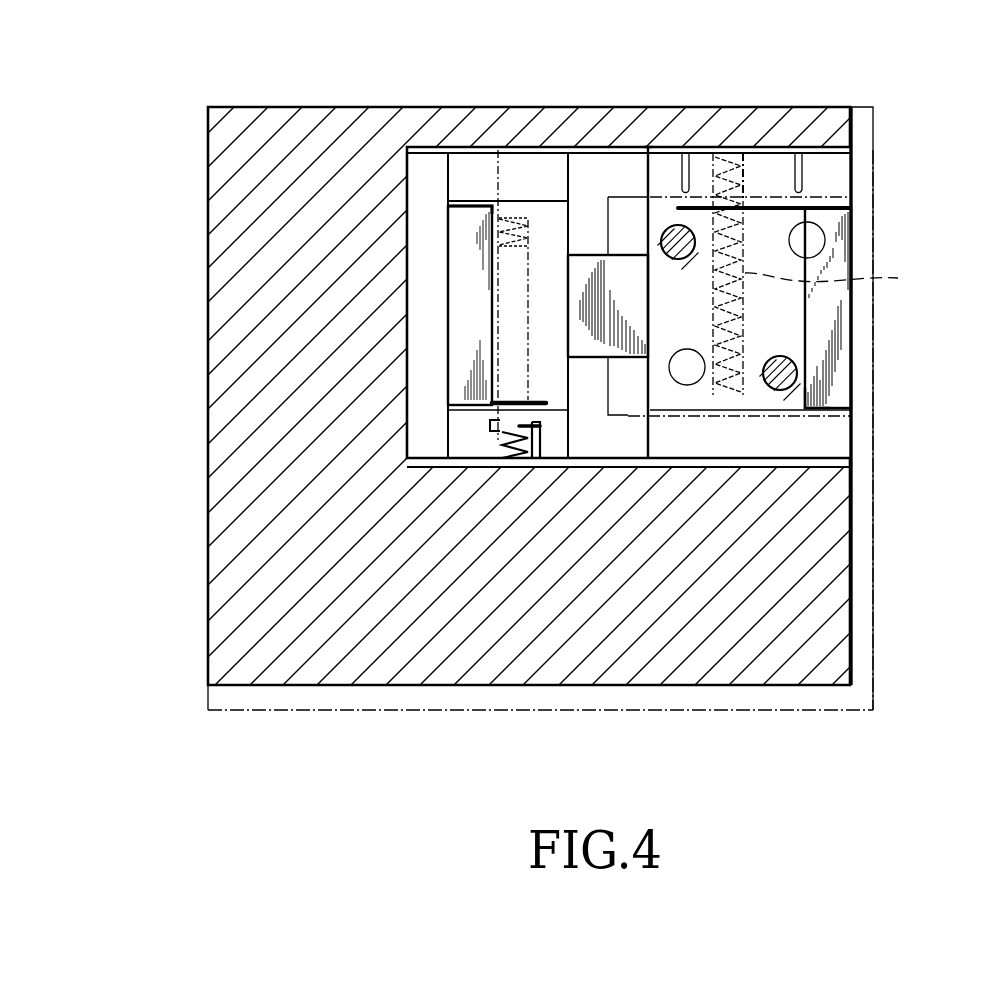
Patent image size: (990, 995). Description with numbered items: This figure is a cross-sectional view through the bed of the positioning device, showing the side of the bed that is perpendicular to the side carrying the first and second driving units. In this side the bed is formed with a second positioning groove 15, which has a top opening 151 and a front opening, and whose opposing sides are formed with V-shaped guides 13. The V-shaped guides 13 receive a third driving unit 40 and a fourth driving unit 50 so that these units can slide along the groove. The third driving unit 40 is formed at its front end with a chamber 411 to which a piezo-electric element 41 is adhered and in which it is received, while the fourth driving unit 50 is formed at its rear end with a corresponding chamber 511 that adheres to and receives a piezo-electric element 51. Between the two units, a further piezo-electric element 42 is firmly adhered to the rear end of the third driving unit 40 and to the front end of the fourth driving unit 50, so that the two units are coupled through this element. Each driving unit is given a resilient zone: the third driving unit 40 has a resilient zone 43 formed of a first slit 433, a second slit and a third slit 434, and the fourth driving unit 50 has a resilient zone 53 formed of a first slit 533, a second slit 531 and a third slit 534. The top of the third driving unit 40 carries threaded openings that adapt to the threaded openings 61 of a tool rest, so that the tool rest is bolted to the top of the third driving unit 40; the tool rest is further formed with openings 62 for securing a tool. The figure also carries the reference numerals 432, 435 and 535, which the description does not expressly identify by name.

The V-shaped guides 13 is at (853, 146).
The second positioning groove 15 is at (627, 166).
The top opening 151 is at (641, 201).
The third driving unit 40 is at (852, 186).
The piezo-electric element 41 is at (830, 323).
The chamber 411 is at (830, 403).
The piezo-electric element 42 is at (595, 258).
The resilient zone 43 is at (726, 152).
The spring seat 432 is at (746, 152).
The first slit 433 is at (852, 231).
The third slit 434 is at (799, 192).
The bore 435 is at (842, 278).
The fourth driving unit 50 is at (528, 153).
The piezo-electric element 51 is at (466, 291).
The chamber 511 is at (491, 206).
The resilient zone 53 is at (481, 456).
The second slit 531 is at (498, 150).
The first slit 533 is at (543, 394).
The third slit 534 is at (543, 442).
The compression spring 535 is at (517, 240).
The threaded openings 61 is at (777, 391).
The openings 62 is at (704, 386).